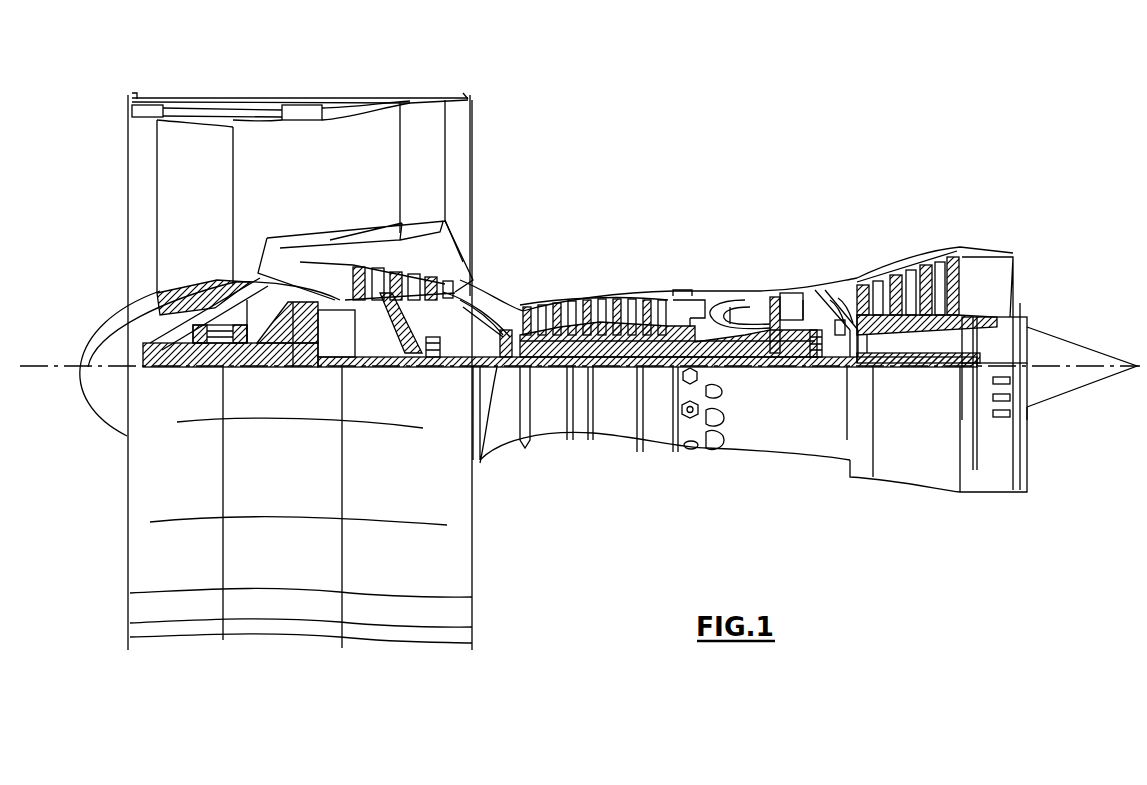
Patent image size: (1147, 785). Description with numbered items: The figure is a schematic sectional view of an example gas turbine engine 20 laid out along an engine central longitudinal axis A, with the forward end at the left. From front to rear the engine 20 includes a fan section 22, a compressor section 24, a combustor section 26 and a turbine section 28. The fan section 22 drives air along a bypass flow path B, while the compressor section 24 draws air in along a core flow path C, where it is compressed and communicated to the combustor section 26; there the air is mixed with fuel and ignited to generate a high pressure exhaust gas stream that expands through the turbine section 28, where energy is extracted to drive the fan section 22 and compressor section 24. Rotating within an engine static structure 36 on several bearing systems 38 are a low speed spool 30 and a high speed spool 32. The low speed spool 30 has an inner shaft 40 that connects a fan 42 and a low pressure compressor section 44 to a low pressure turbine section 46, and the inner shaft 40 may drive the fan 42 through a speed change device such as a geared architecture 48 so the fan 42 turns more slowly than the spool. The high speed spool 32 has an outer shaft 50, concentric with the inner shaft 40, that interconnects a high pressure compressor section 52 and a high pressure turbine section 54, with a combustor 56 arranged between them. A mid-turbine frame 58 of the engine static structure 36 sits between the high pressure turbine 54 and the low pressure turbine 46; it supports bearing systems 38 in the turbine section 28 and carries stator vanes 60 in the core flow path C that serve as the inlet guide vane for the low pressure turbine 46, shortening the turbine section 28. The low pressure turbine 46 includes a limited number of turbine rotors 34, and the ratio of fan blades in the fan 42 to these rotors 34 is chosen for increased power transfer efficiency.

The gas turbine engine 20 is at (736, 143).
The fan section 22 is at (233, 88).
The compressor section 24 is at (521, 272).
The combustor section 26 is at (729, 260).
The turbine section 28 is at (870, 230).
The low speed spool 30 is at (620, 378).
The high speed spool 32 is at (660, 303).
The turbine rotors 34 is at (945, 318).
The engine static structure 36 is at (657, 460).
The bearing systems 38 is at (228, 368).
The inner shaft 40 is at (492, 372).
The fan 42 is at (208, 221).
The low pressure compressor section 44 is at (412, 275).
The low pressure turbine section 46 is at (909, 265).
The geared architecture 48 is at (303, 366).
The outer shaft 50 is at (735, 360).
The high pressure compressor section 52 is at (610, 306).
The high pressure turbine section 54 is at (793, 298).
The combustor 56 is at (727, 305).
The mid-turbine frame 58 is at (837, 270).
The stator vanes 60 is at (836, 305).
The engine central longitudinal axis A is at (1100, 367).
The bypass flow path B is at (345, 175).
The core flow path C is at (297, 267).